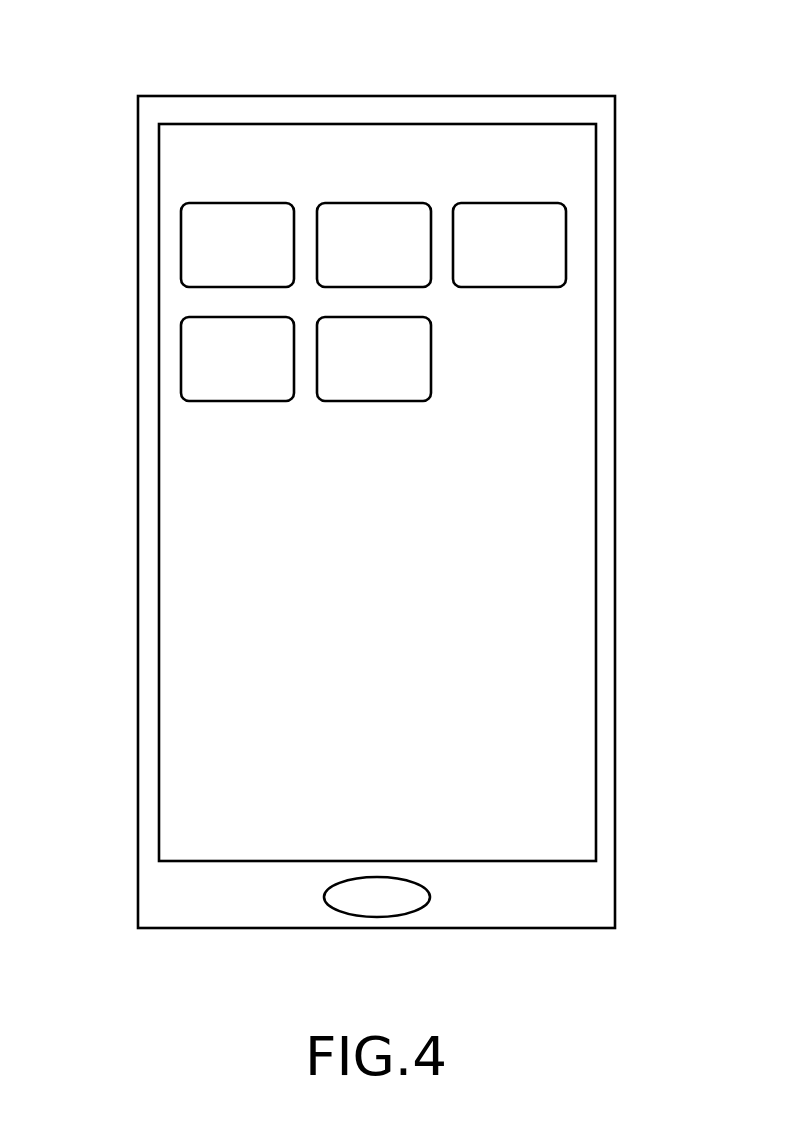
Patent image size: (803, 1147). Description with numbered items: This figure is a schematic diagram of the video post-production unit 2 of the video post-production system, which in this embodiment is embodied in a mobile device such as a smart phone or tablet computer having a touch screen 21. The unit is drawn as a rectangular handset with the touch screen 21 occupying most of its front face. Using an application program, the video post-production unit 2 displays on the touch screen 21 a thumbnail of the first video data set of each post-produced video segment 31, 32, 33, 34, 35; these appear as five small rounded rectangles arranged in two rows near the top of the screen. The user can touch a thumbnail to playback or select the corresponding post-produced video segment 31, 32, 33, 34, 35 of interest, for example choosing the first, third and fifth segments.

The video post-production unit 2 is at (138, 272).
The touch screen 21 is at (159, 319).
The first post-produced video segment 31 is at (237, 203).
The second post-produced video segment 32 is at (375, 203).
The third post-produced video segment 33 is at (510, 203).
The fourth post-produced video segment 34 is at (181, 358).
The fifth post-produced video segment 35 is at (431, 358).